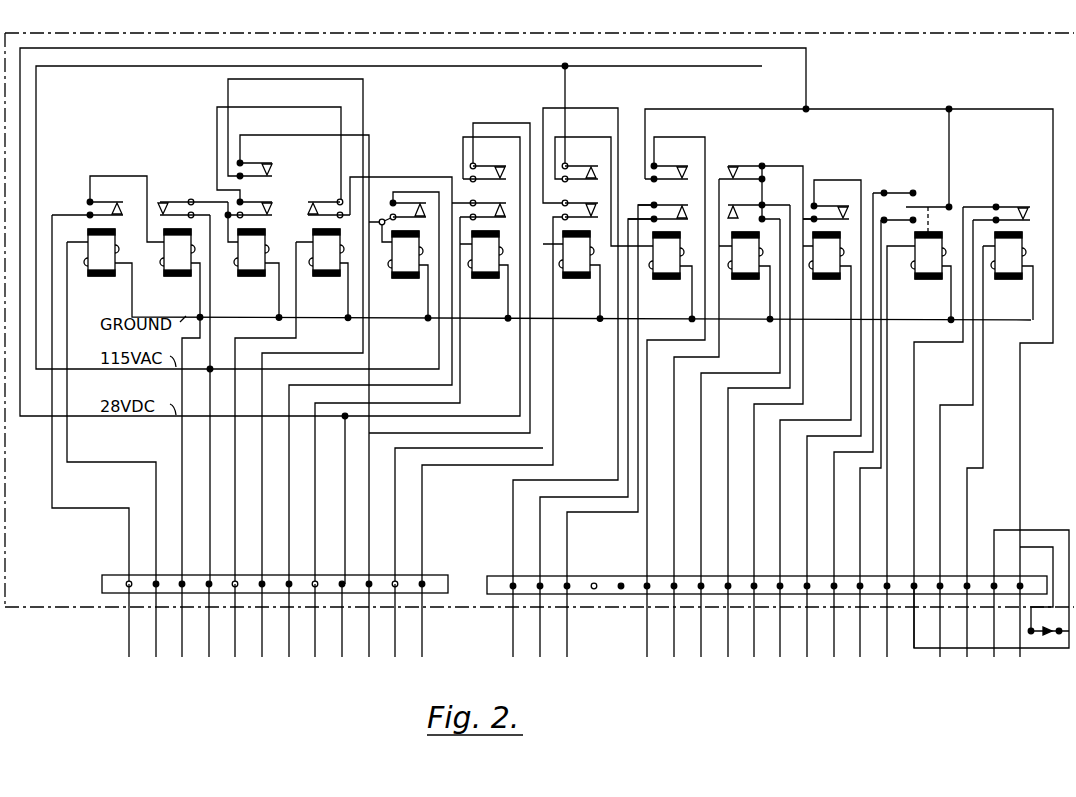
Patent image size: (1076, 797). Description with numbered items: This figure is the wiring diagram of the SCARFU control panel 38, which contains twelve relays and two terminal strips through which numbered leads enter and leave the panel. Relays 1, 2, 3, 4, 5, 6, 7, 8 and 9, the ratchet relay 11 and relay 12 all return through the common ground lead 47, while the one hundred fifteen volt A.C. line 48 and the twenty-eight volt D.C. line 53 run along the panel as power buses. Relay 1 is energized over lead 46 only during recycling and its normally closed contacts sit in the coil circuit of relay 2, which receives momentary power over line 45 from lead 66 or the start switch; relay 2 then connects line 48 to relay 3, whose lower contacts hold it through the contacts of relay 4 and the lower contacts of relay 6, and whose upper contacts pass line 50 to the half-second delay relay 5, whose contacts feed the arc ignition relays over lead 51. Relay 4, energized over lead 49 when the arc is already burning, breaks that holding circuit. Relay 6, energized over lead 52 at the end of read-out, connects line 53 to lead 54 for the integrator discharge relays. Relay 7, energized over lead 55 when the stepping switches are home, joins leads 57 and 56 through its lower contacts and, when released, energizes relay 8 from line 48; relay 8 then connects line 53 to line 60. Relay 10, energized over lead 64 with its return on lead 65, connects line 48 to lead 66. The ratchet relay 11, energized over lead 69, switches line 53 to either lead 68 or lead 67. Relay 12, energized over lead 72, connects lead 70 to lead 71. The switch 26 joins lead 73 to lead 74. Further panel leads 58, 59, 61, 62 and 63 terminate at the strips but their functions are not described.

The relay 1 is at (108, 279).
The relay 2 is at (184, 279).
The relay 3 is at (258, 279).
The relay 4 is at (333, 279).
The delay relay 5 is at (412, 281).
The relay 6 is at (492, 281).
The relay 7 is at (583, 281).
The relay 8 is at (673, 282).
The relay 9 is at (752, 282).
The relay 10 is at (835, 282).
The ratchet relay 11 is at (928, 282).
The relay 12 is at (1016, 282).
The switch 26 is at (1042, 637).
The SCARFU control panel 38 is at (599, 390).
The line 45 is at (129, 633).
The lead 46 is at (156, 633).
The ground lead 47 is at (182, 633).
The lead 48 is at (209, 633).
The lead 49 is at (235, 633).
The line 50 is at (262, 633).
The lead 51 is at (289, 633).
The lead 52 is at (315, 633).
The lead 53 is at (342, 551).
The lead 54 is at (369, 633).
The lead 55 is at (395, 633).
The lead 56 is at (422, 633).
The lead 57 is at (513, 634).
The terminal 58 is at (540, 634).
The terminal 59 is at (567, 634).
The line 60 is at (647, 634).
The terminal 61 is at (674, 634).
The terminal 62 is at (701, 634).
The terminal 63 is at (728, 634).
The lead 64 is at (754, 634).
The lead 65 is at (780, 634).
The lead 66 is at (807, 634).
The lead 67 is at (834, 634).
The lead 68 is at (860, 634).
The lead 69 is at (887, 634).
The lead 70 is at (909, 654).
The lead 71 is at (940, 634).
The lead 72 is at (967, 634).
The lead 73 is at (994, 634).
The lead 74 is at (1020, 634).